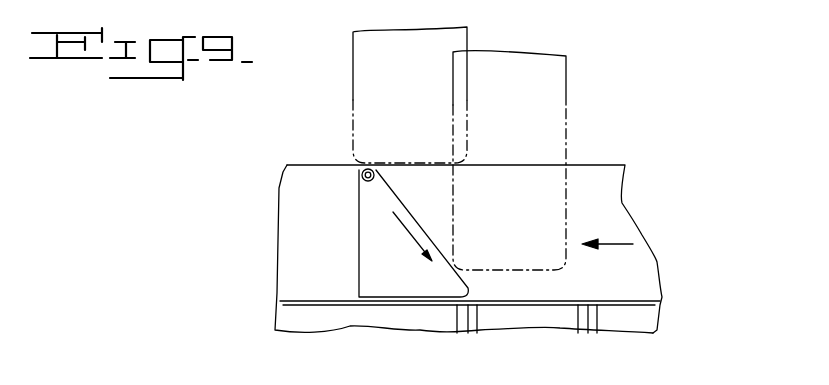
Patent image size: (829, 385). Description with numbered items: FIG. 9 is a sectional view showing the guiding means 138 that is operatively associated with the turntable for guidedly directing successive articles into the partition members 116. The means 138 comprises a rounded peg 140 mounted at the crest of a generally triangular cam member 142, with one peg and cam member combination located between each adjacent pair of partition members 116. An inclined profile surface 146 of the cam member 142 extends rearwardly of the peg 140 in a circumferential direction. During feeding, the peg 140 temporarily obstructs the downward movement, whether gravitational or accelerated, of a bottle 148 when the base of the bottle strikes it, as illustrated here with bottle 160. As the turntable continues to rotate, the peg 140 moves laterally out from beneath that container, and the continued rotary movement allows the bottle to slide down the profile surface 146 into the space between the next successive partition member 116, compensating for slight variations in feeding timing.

The partition member 116 is at (600, 322).
The means for guidedly directing articles 138 is at (297, 256).
The rounded peg 140 is at (362, 181).
The cam member 142 is at (365, 275).
The inclined profile surface 146 is at (426, 232).
The bottle 148 is at (467, 32).
The bottle 160 is at (363, 166).